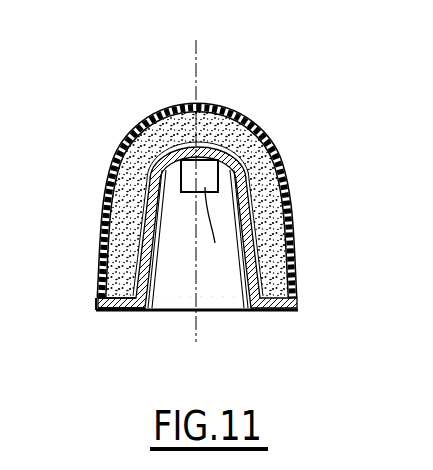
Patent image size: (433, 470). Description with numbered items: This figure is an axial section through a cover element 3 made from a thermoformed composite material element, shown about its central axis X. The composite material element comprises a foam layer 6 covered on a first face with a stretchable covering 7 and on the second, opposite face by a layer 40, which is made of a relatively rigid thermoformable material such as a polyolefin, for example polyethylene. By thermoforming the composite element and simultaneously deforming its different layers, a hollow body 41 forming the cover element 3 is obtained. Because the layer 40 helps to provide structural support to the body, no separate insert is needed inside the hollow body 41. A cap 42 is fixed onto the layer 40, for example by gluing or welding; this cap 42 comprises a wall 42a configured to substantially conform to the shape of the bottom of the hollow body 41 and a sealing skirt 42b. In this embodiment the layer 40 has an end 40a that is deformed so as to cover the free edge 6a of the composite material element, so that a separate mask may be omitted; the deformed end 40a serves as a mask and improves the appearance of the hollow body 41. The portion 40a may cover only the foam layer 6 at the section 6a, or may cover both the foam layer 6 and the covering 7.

The central axis X is at (193, 60).
The cover element 3 is at (161, 166).
The stretchable covering 7 is at (110, 176).
The hollow body 41 is at (112, 256).
The foam layer 6 is at (120, 233).
The free edge 6a is at (97, 295).
The cap 42 is at (171, 188).
The wall 42a is at (180, 148).
The sealing skirt 42b is at (215, 243).
The layer 40 is at (150, 312).
The end 40a is at (125, 312).